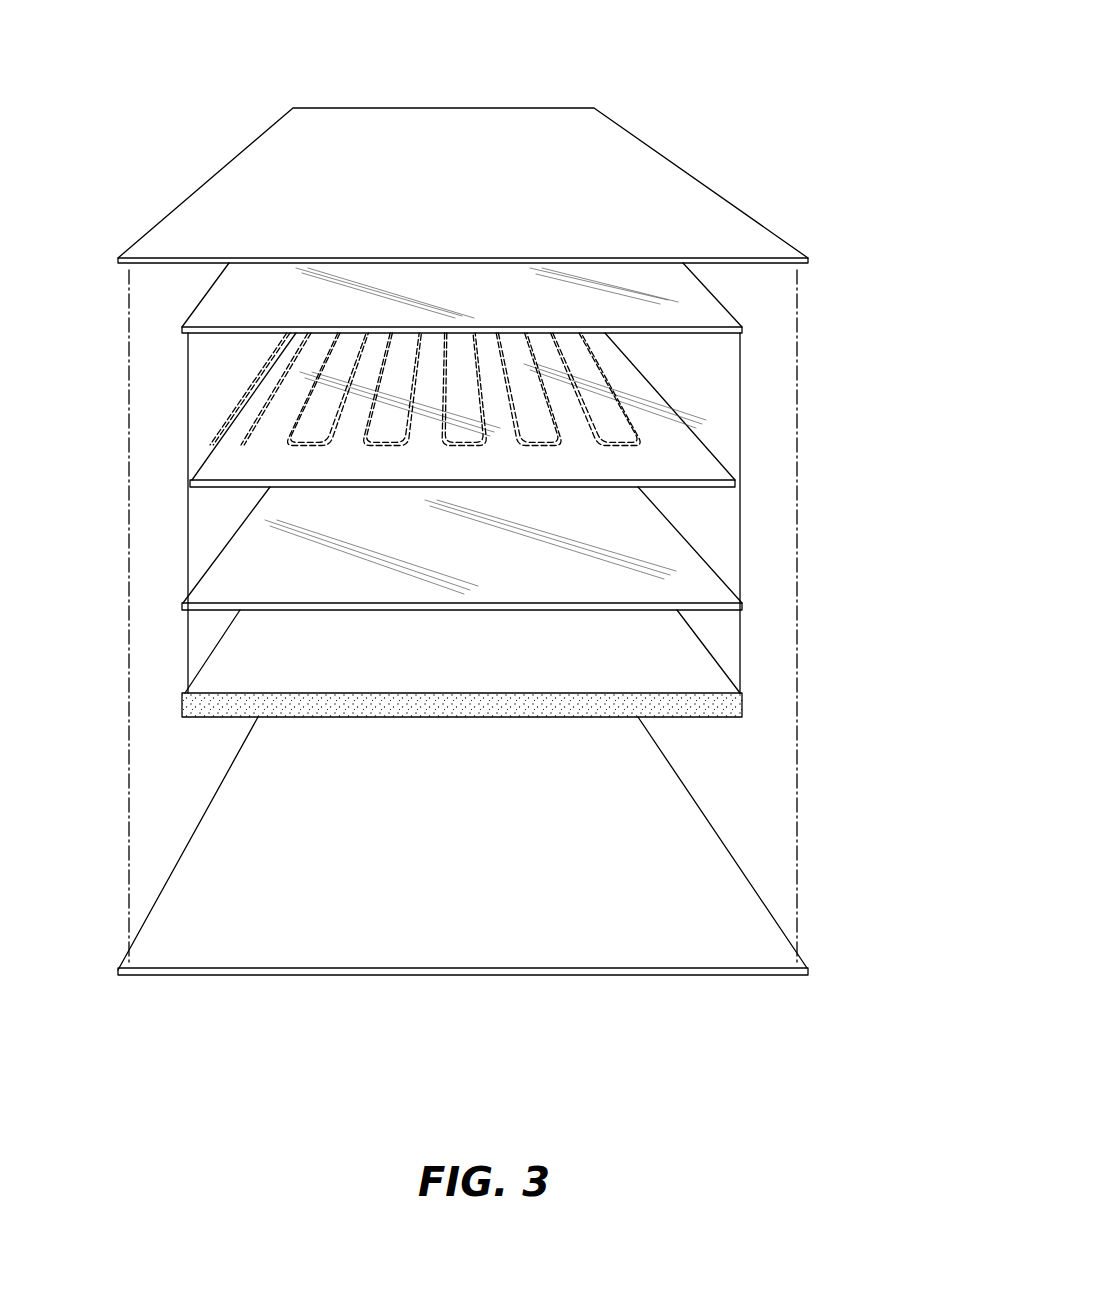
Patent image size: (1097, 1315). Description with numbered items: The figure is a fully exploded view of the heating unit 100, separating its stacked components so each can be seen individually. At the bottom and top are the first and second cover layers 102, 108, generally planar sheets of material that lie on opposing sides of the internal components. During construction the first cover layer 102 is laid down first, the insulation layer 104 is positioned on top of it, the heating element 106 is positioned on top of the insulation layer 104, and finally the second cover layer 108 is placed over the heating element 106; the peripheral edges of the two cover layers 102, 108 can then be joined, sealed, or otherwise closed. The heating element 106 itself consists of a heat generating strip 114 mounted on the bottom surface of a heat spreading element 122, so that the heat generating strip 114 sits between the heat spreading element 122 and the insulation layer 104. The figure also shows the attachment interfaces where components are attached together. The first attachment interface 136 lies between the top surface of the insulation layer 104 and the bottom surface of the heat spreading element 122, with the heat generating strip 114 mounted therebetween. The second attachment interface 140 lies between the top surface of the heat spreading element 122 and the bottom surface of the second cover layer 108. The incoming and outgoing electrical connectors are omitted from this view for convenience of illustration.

The heating unit 100 is at (722, 120).
The first cover layer 102 is at (668, 878).
The insulation layer 104 is at (668, 660).
The heating element 106 is at (118, 362).
The second cover layer 108 is at (675, 196).
The heat generating strip 114 is at (592, 374).
The heat spreading element 122 is at (692, 458).
The first attachment interface 136 is at (685, 573).
The second attachment interface 140 is at (677, 304).